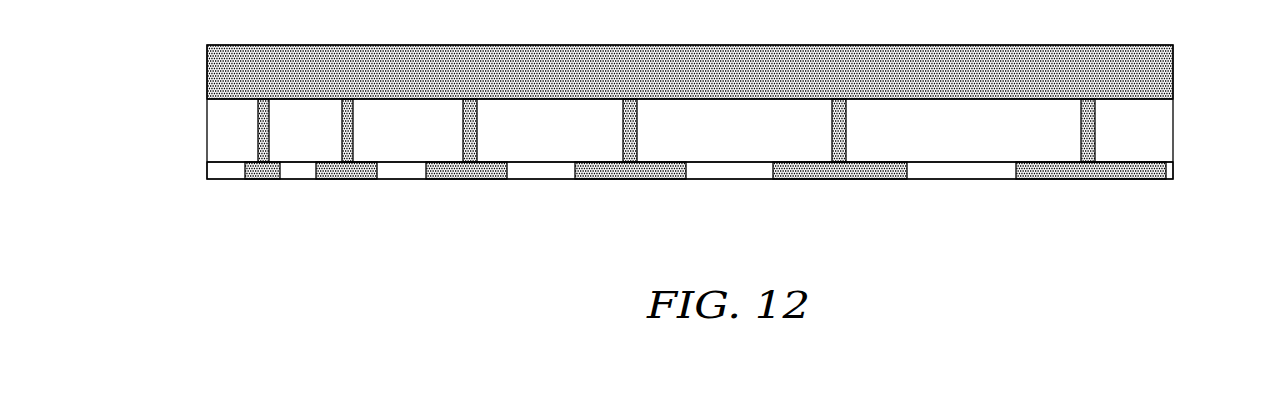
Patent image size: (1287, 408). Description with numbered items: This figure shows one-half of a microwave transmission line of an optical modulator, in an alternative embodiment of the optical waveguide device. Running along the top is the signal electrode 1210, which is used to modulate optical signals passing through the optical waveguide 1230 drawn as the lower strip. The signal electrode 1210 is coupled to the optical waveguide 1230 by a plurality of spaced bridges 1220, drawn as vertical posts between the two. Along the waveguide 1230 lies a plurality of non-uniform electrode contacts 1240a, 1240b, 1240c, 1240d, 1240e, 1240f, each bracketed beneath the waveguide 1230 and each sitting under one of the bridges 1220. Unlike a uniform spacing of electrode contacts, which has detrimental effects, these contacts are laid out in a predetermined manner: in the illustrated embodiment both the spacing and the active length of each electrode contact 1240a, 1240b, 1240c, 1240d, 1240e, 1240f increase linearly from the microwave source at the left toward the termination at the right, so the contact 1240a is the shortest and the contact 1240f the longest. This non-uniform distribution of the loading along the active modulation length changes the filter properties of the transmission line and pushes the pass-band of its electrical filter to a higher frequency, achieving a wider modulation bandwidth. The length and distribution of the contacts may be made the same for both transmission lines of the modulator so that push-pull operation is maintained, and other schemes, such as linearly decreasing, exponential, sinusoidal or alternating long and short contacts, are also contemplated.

The signal electrode 1210 is at (1173, 64).
The spaced bridges 1220 is at (1095, 133).
The optical waveguide 1230 is at (192, 171).
The electrode contact 1240a is at (245, 190).
The electrode contact 1240b is at (316, 190).
The electrode contact 1240c is at (426, 190).
The electrode contact 1240d is at (575, 190).
The electrode contact 1240e is at (773, 190).
The electrode contact 1240f is at (1016, 190).